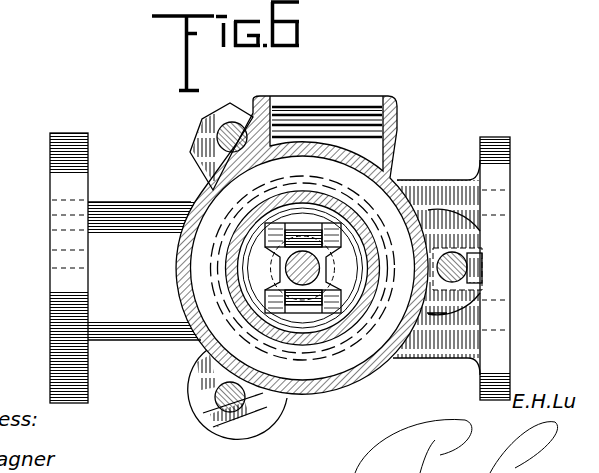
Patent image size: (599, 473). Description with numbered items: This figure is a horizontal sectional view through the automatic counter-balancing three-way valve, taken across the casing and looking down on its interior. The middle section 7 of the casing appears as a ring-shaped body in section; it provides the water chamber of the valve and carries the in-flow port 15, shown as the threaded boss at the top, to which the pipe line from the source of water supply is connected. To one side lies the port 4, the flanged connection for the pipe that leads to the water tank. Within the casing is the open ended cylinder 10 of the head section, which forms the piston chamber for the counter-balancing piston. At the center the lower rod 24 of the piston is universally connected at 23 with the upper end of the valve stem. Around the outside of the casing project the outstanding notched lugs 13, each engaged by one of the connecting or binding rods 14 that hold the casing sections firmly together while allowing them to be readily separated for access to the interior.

The port 4 is at (50, 273).
The middle section 7 is at (187, 230).
The open ended cylinder 10 is at (350, 210).
The notched lugs 13 is at (195, 149).
The binding rods 14 is at (217, 128).
The in-flow port 15 is at (333, 133).
The universal connection 23 is at (301, 232).
The lower rod 24 is at (336, 203).